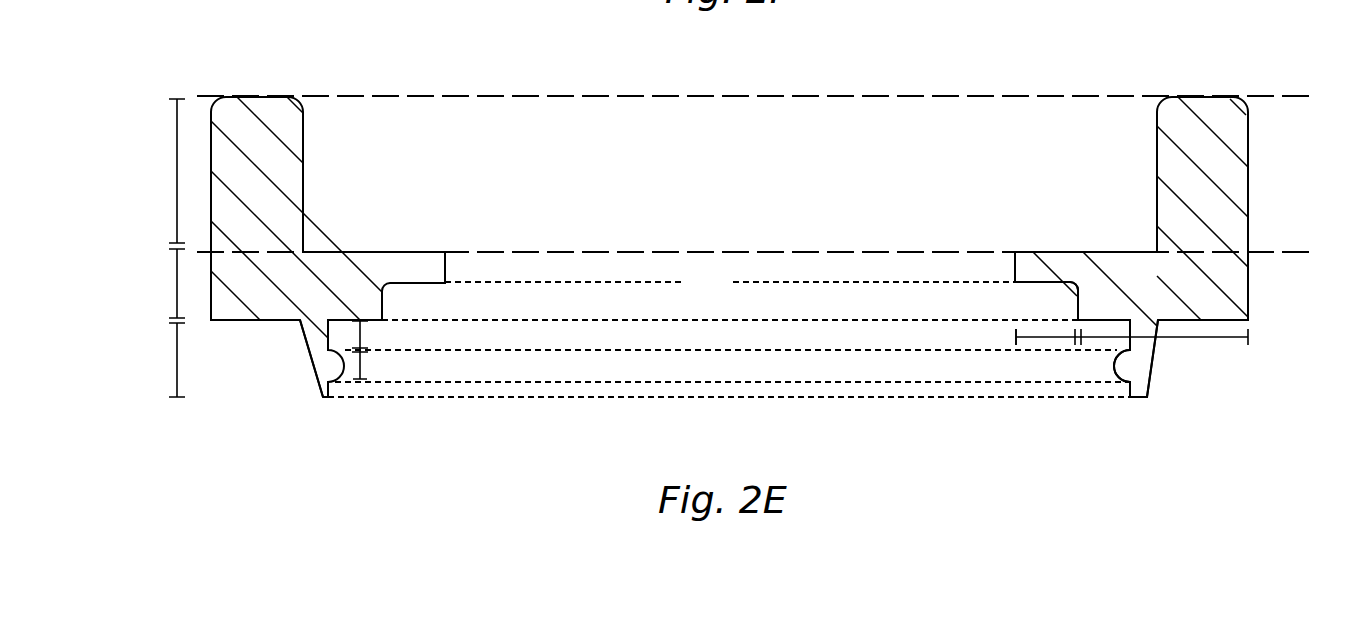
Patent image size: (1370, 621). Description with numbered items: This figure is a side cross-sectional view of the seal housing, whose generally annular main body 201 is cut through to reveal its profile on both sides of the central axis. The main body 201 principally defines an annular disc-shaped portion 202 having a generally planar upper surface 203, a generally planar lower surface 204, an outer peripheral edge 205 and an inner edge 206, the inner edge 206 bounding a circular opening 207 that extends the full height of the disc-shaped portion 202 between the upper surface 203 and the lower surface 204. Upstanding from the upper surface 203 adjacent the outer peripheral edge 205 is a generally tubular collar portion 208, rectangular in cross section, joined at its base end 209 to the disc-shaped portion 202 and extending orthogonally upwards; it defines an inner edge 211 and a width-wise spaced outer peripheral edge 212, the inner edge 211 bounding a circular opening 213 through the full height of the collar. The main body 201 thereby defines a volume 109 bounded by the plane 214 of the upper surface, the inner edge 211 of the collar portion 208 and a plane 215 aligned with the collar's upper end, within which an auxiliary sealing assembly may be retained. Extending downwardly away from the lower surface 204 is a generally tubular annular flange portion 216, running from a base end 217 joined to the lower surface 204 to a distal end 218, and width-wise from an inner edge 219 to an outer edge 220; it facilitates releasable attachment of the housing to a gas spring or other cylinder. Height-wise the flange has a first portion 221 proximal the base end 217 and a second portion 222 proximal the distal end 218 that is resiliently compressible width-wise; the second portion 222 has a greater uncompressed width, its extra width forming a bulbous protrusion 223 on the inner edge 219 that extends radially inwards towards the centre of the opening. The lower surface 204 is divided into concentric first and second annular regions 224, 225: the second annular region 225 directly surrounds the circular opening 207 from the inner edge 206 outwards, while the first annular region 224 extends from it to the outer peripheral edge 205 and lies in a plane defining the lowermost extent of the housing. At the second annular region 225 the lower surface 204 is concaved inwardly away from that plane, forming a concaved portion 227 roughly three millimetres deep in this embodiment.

The main body 201 is at (125, 26).
The volume 109 is at (864, 158).
The annular disc-shaped portion 202 is at (177, 283).
The upper surface 203 is at (415, 252).
The lower surface 204 is at (240, 320).
The outer peripheral edge 205 is at (1272, 286).
The inner edge 206 is at (1016, 268).
The circular opening 207 is at (727, 293).
The collar portion 208 is at (177, 181).
The base end 209 is at (304, 246).
The inner edge 211 is at (1125, 177).
The outer peripheral edge 212 is at (1272, 176).
The circular opening 213 is at (727, 187).
The plane 214 is at (1285, 253).
The plane 215 is at (1285, 97).
The annular flange portion 216 is at (177, 362).
The base end 217 is at (309, 325).
The distal end 218 is at (323, 396).
The inner edge 219 is at (1093, 365).
The outer edge 220 is at (1172, 364).
The first portion 221 is at (362, 336).
The second portion 222 is at (364, 364).
The bulbous protrusion 223 is at (1125, 370).
The first annular region 224 is at (1238, 337).
The second annular region 225 is at (1027, 338).
The concaved portion 227 is at (1014, 300).